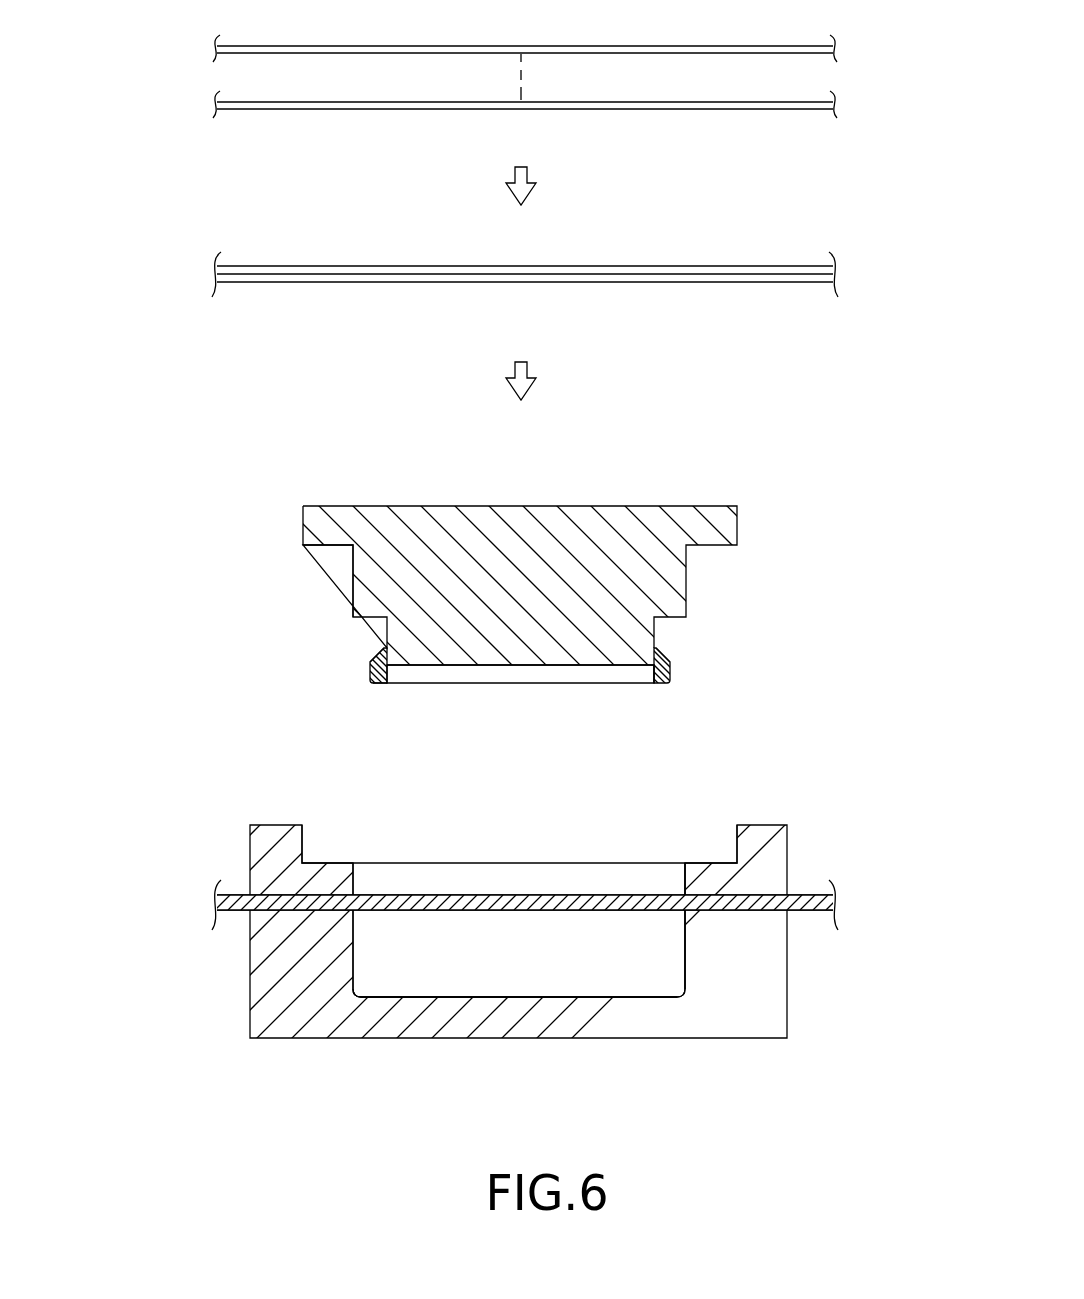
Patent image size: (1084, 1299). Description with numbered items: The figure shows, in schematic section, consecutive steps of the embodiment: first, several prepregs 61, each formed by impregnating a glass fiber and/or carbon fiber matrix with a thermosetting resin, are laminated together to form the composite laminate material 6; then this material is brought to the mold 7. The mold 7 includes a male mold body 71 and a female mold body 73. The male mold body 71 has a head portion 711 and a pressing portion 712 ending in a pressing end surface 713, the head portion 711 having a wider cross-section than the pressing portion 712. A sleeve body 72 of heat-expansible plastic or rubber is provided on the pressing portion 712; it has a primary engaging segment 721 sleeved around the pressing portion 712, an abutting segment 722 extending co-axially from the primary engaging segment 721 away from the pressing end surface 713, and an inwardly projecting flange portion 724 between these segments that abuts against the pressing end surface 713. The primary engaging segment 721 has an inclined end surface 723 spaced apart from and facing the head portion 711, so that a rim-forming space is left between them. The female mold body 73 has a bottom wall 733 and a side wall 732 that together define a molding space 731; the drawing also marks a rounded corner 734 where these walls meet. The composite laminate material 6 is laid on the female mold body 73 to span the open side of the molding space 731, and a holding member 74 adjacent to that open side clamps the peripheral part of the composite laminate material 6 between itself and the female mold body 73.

The composite laminate material 6 is at (188, 268).
The prepregs 61 is at (218, 50).
The mold 7 is at (800, 720).
The male mold body 71 is at (714, 496).
The head portion 711 is at (322, 523).
The pressing portion 712 is at (478, 655).
The pressing end surface 713 is at (558, 667).
The sleeve body 72 is at (692, 663).
The primary engaging segment 721 is at (661, 656).
The abutting segment 722 is at (380, 687).
The inclined end surface 723 is at (379, 650).
The inwardly projecting flange portion 724 is at (650, 668).
The female mold body 73 is at (294, 1048).
The molding space 731 is at (533, 930).
The side wall 732 is at (680, 970).
The bottom wall 733 is at (517, 1000).
The rounded corner of cavity 734 is at (367, 978).
The holding member 74 is at (257, 848).